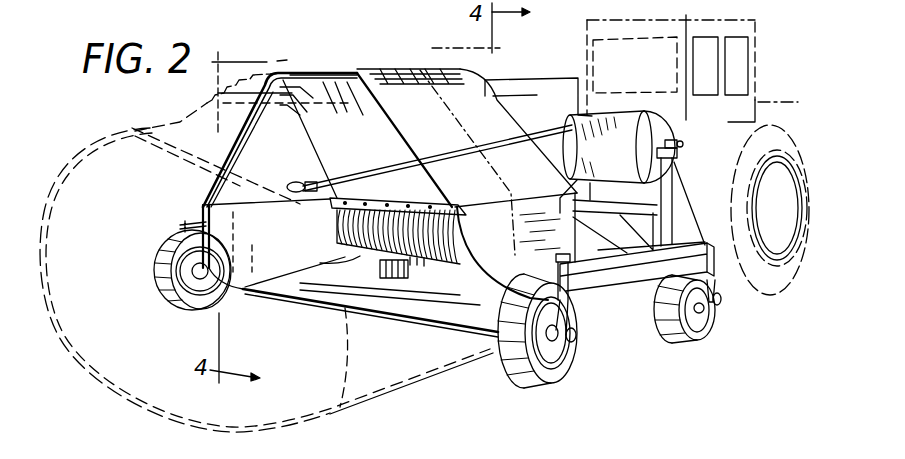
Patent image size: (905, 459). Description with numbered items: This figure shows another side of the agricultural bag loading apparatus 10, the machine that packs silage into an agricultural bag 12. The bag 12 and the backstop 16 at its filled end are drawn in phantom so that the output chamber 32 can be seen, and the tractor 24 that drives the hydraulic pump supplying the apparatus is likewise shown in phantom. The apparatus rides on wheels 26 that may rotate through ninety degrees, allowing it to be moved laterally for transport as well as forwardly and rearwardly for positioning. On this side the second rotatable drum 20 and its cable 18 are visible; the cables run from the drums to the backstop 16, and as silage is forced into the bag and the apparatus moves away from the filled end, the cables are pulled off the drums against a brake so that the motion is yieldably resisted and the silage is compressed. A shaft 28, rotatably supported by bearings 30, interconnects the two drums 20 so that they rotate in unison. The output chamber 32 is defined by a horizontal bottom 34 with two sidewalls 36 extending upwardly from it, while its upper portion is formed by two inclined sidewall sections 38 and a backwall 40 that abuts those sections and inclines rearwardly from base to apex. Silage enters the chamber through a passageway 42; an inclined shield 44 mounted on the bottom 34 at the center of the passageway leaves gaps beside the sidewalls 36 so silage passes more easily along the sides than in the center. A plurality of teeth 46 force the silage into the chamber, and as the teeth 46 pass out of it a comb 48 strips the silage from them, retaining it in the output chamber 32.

The agricultural bag loading apparatus 10 is at (413, 52).
The agricultural bag 12 is at (84, 160).
The backstop 16 is at (100, 137).
The cable 18 is at (494, 133).
The rotatable drum 20 is at (660, 116).
The tractor 24 is at (755, 90).
The wheels 26 is at (658, 333).
The shaft 28 is at (548, 149).
The bearings 30 is at (668, 140).
The output chamber 32 is at (268, 304).
The horizontal bottom 34 is at (410, 306).
The sidewalls 36 is at (263, 245).
The inclined sidewall sections 38 is at (284, 148).
The backwall 40 is at (350, 151).
The passageway 42 is at (338, 257).
The inclined shield 44 is at (455, 282).
The teeth 46 is at (403, 271).
The comb 48 is at (377, 193).